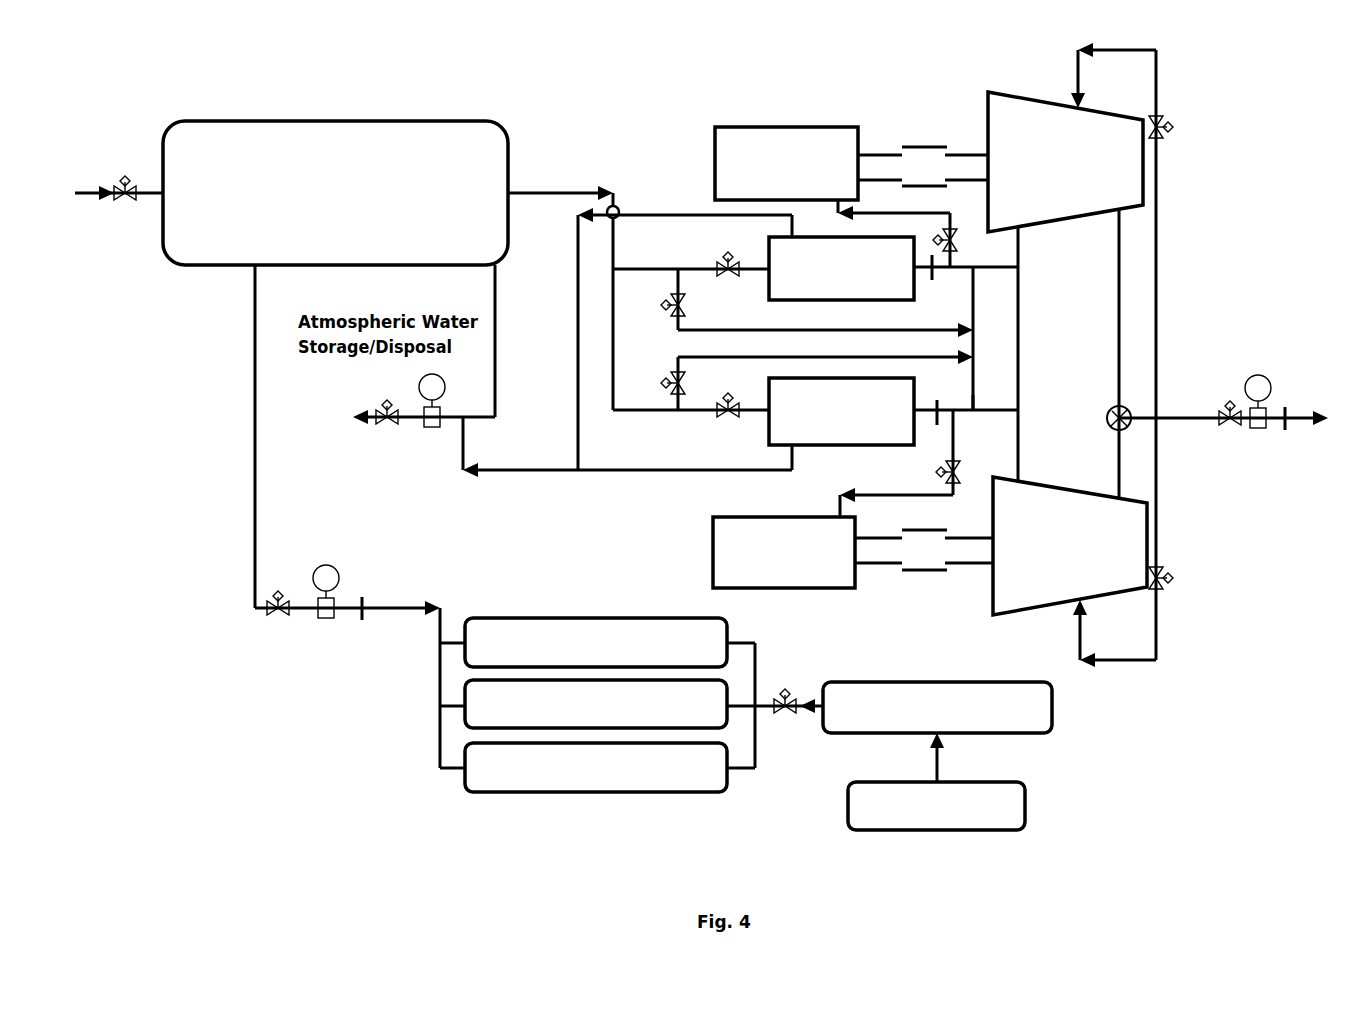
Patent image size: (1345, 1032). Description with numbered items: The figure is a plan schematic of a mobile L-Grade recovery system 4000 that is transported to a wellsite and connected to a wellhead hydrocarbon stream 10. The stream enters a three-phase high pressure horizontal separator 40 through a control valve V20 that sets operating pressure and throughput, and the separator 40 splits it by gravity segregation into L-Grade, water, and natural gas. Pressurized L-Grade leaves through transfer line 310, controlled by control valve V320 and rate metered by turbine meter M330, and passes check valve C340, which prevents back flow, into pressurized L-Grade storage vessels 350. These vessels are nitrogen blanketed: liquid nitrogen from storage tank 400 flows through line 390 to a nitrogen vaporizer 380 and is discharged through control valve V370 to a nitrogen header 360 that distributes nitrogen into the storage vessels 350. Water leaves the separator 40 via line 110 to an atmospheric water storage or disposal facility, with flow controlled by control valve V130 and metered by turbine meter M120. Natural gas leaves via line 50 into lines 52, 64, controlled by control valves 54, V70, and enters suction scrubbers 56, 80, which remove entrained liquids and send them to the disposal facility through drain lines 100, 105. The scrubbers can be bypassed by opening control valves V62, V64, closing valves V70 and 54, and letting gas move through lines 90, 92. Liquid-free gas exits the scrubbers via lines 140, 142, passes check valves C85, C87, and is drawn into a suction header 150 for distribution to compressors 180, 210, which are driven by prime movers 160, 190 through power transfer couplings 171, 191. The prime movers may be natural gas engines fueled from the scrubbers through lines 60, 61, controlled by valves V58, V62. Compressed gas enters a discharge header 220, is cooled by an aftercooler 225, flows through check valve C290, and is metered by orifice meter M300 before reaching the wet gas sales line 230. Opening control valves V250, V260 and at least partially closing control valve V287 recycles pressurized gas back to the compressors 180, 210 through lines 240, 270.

The mobile L-Grade recovery system 4000 is at (556, 68).
The wellhead hydrocarbon stream 10 is at (98, 192).
The control valve V20 is at (125, 205).
The three-phase high pressure horizontal separator 40 is at (425, 121).
The natural gas line 50 is at (535, 193).
The drain line 105 is at (575, 250).
The drain line 100 is at (578, 488).
The water line 110 is at (495, 400).
The control valve V130 is at (387, 430).
The turbine meter M120 is at (432, 430).
The transfer line 310 is at (253, 305).
The control valve V320 is at (282, 585).
The turbine meter M330 is at (340, 572).
The check valve C340 is at (368, 598).
The pressurized L-Grade storage vessels 350 is at (710, 618).
The nitrogen header 360 is at (760, 662).
The control valve V370 is at (790, 687).
The nitrogen vaporizer 380 is at (865, 682).
The liquid nitrogen line 390 is at (940, 767).
The liquid nitrogen storage tank 400 is at (922, 830).
The natural gas line 52 is at (625, 269).
The control valve 54 is at (724, 251).
The control valve V64 is at (682, 323).
The bypass line 92 is at (735, 330).
The control valve V62 is at (662, 379).
The natural gas line 64 is at (641, 418).
The control valve V70 is at (724, 419).
The suction scrubber 56 is at (912, 293).
The check valve C87 is at (932, 278).
The natural gas line 142 is at (992, 268).
The valve V58 is at (958, 249).
The fuel gas line 60 is at (882, 213).
The bypass line 90 is at (980, 403).
The check valve C85 is at (932, 403).
The natural gas line 140 is at (995, 415).
The suction scrubber 80 is at (913, 460).
The prime mover 160 is at (760, 125).
The power transfer coupling 171 is at (915, 147).
The prime mover 190 is at (712, 568).
The fuel gas line 61 is at (895, 497).
The power transfer coupling 191 is at (935, 573).
The compressor 180 is at (1033, 95).
The compressor 210 is at (1050, 620).
The suction header 150 is at (1020, 438).
The discharge header 220 is at (1117, 382).
The aftercooler 225 is at (1098, 427).
The recycle line 240 is at (1158, 225).
The control valve V250 is at (1172, 125).
The control valve V260 is at (1175, 585).
The recycle line 270 is at (1120, 662).
The wet gas sales line 230 is at (1325, 425).
The control valve V287 is at (1226, 398).
The orifice meter M300 is at (1253, 430).
The check valve C290 is at (1284, 432).